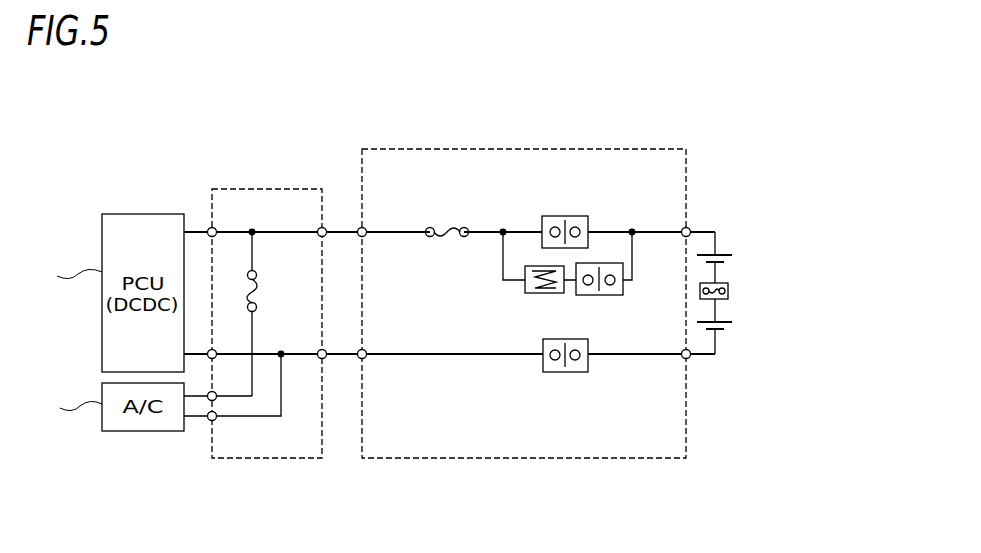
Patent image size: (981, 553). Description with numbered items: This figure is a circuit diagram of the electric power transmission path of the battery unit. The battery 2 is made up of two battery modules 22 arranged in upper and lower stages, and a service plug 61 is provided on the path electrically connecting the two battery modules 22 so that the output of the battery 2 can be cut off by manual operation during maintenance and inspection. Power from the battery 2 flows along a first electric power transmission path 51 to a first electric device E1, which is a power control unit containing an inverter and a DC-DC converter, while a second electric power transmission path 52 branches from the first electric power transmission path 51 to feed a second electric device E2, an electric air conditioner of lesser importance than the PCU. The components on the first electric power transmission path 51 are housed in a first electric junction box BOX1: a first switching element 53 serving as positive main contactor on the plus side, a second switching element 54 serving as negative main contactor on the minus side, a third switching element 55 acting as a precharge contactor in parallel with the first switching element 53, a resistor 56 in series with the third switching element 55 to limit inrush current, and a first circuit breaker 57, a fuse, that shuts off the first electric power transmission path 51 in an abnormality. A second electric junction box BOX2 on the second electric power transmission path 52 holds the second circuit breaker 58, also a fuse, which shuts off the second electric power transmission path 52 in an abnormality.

The battery 2 is at (744, 221).
The battery module 22 is at (730, 262).
The first electric power transmission path 51 is at (408, 232).
The second electric power transmission path 52 is at (267, 417).
The first switching element 53 is at (580, 216).
The second switching element 54 is at (563, 372).
The third switching element 55 is at (610, 295).
The resistor 56 is at (533, 293).
The first circuit breaker 57 is at (447, 228).
The second circuit breaker 58 is at (258, 294).
The service plug 61 is at (690, 290).
The first electric device E1 is at (64, 274).
The second electric device E2 is at (64, 406).
The first electric junction box BOX1 is at (523, 149).
The second electric junction box BOX2 is at (225, 189).